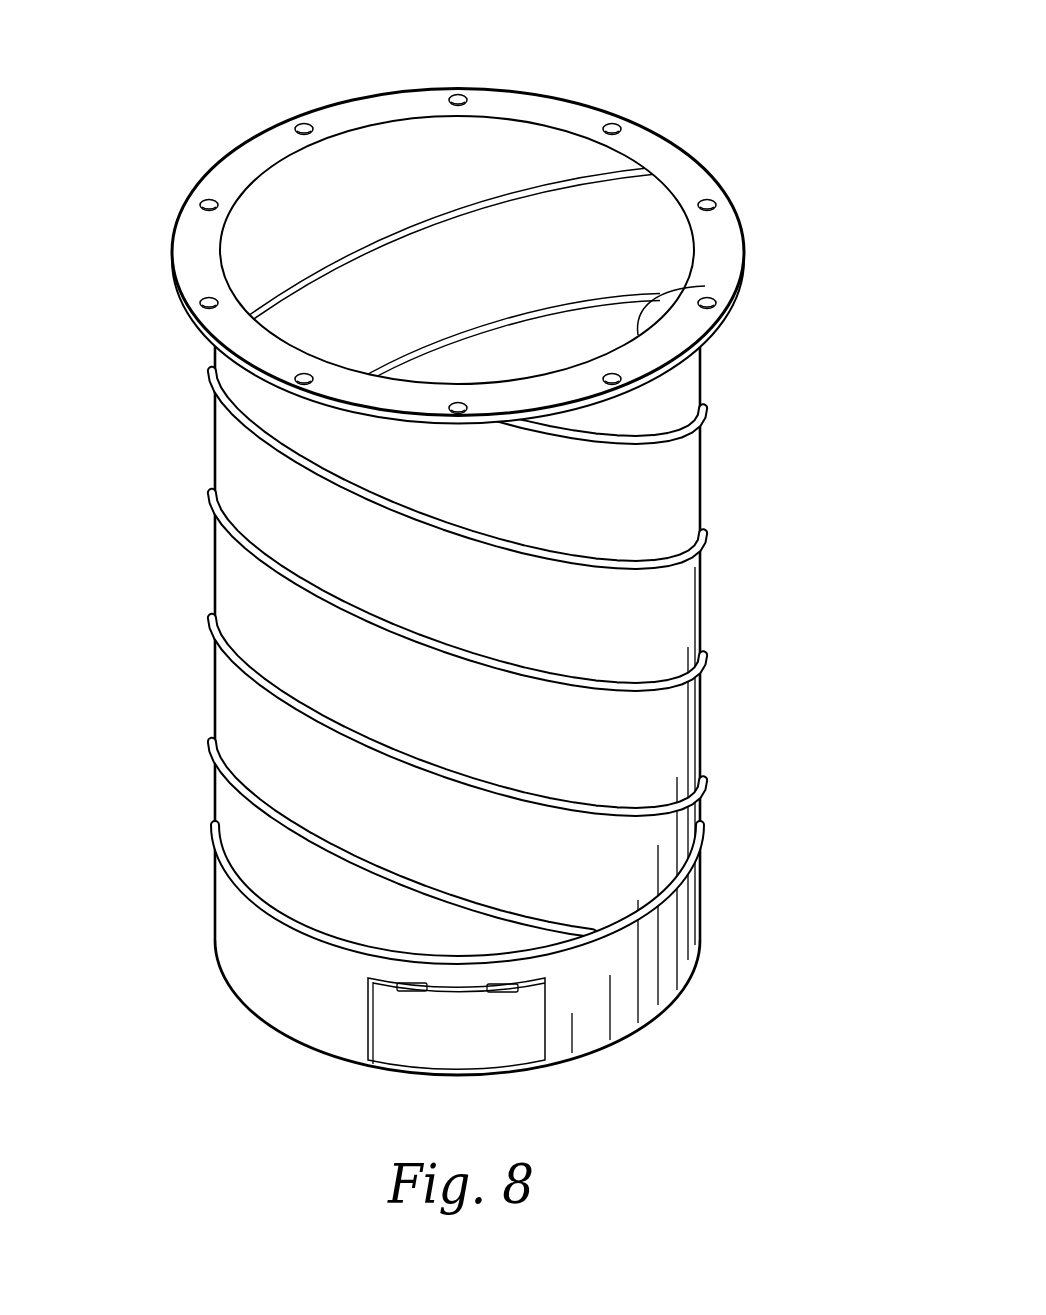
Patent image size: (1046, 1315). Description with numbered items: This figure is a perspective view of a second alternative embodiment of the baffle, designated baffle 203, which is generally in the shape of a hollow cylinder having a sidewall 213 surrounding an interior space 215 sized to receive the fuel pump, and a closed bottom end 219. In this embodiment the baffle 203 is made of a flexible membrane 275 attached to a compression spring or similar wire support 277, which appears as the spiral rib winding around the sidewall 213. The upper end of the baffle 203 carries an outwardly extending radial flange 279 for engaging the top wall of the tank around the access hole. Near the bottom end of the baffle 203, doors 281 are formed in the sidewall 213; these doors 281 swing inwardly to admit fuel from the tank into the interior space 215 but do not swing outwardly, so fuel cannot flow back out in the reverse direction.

The baffle 203 is at (664, 78).
The sidewall 213 is at (702, 492).
The interior space 215 is at (672, 298).
The closed bottom end 219 is at (570, 1058).
The flexible membrane 275 is at (702, 596).
The wire support 277 is at (702, 684).
The radial flange 279 is at (172, 250).
The doors 281 is at (383, 1022).